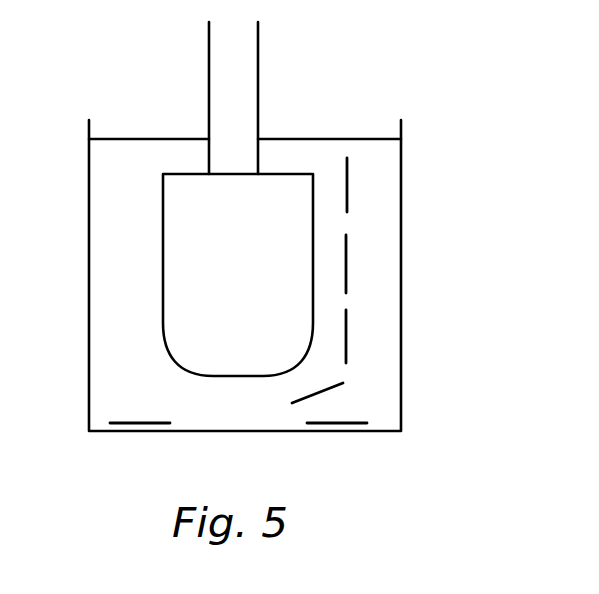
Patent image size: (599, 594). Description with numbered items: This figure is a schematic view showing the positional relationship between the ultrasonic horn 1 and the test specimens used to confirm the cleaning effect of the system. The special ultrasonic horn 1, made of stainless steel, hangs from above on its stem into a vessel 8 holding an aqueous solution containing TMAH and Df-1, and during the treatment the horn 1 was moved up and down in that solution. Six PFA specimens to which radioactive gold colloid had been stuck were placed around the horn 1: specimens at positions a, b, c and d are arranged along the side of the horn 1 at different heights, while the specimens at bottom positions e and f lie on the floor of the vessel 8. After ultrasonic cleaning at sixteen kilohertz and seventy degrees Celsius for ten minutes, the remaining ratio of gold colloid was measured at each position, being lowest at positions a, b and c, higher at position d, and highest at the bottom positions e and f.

The vessel 8 is at (117, 208).
The ultrasonic horn 1 is at (285, 215).
The test specimen position a is at (333, 388).
The test specimen position b is at (346, 335).
The test specimen position c is at (346, 262).
The test specimen position d is at (347, 197).
The bottom test specimen position e is at (137, 423).
The bottom test specimen position f is at (340, 423).